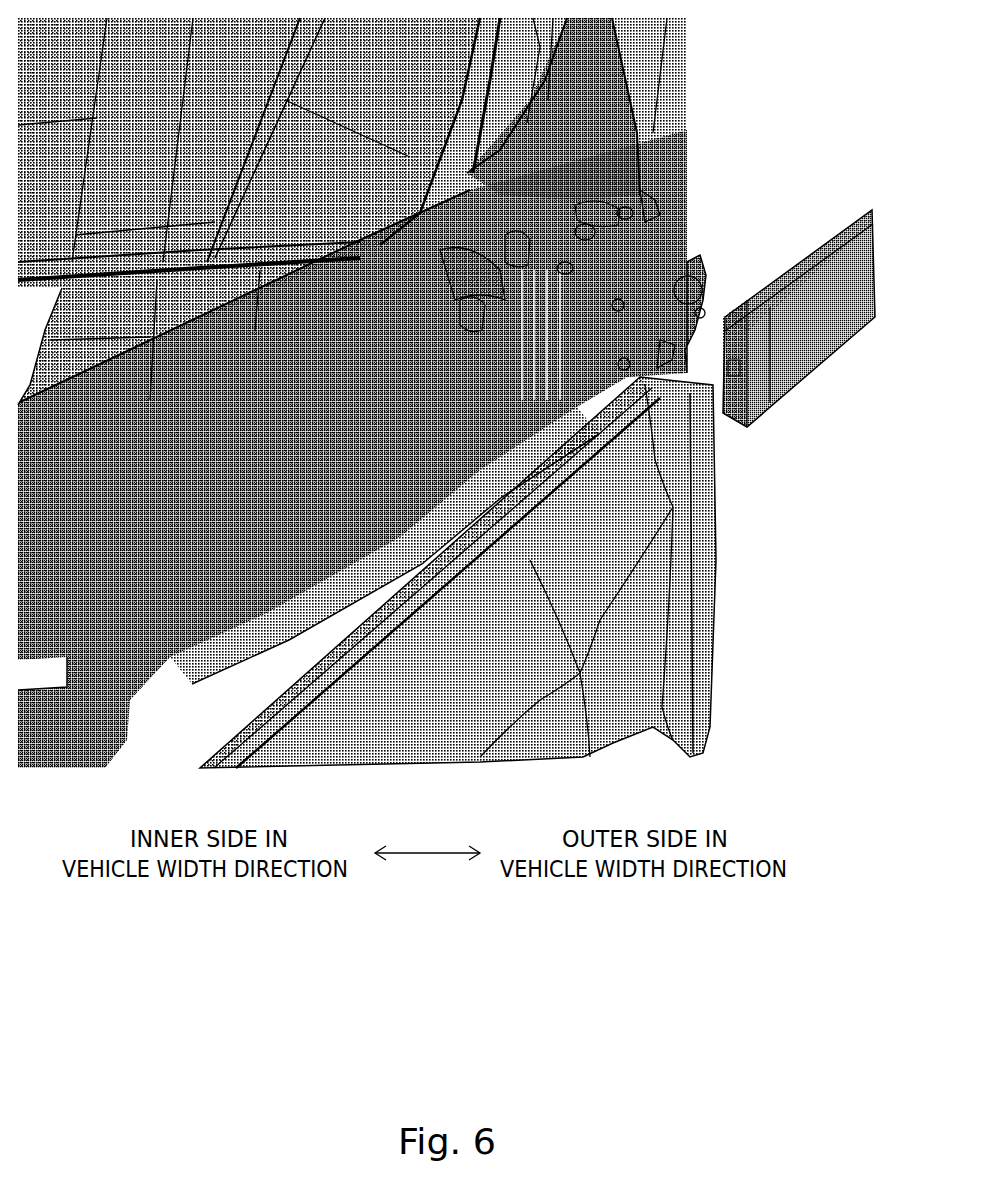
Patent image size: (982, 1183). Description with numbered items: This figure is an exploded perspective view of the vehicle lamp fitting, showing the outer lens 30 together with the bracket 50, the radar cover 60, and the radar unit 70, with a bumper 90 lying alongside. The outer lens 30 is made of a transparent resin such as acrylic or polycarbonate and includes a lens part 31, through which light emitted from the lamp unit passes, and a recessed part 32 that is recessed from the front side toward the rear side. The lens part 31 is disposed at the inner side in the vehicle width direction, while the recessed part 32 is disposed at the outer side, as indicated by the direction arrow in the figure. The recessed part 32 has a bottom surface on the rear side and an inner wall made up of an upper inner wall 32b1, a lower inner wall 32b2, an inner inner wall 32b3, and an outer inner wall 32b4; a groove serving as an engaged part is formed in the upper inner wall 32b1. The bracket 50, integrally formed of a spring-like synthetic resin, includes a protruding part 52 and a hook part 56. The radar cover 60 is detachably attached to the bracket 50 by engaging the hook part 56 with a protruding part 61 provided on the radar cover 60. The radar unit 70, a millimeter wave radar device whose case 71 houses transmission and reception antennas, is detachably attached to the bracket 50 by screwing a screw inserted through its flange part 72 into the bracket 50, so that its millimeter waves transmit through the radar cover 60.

The outer lens 30 is at (394, 250).
The lens part 31 is at (356, 381).
The recessed part 32 is at (490, 275).
The upper inner wall 32b1 is at (515, 245).
The lower inner wall 32b2 is at (498, 318).
The inner inner wall 32b3 is at (468, 322).
The outer inner wall 32b4 is at (580, 203).
The bracket 50 is at (658, 182).
The protruding part 52 is at (580, 230).
The hook part 56 is at (625, 215).
The radar cover 60 is at (882, 203).
The protruding part 61 is at (838, 218).
The radar unit 70 is at (705, 246).
The case 71 is at (673, 340).
The flange part 72 is at (615, 305).
The bumper 90 is at (613, 745).